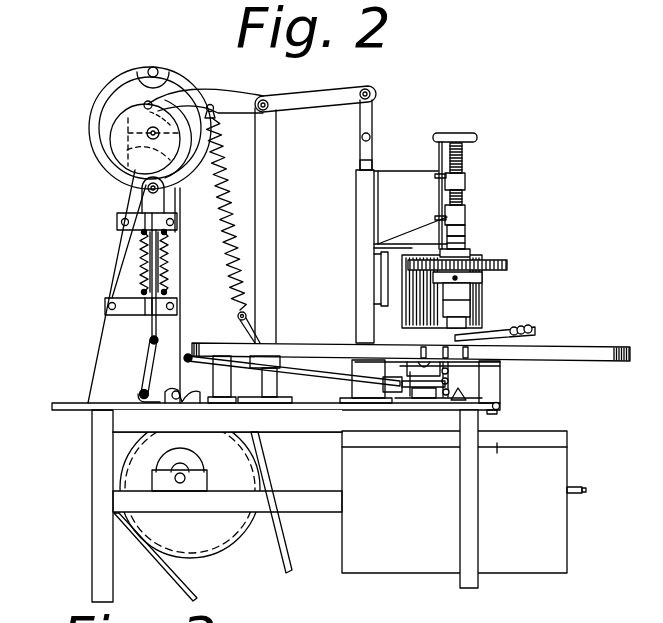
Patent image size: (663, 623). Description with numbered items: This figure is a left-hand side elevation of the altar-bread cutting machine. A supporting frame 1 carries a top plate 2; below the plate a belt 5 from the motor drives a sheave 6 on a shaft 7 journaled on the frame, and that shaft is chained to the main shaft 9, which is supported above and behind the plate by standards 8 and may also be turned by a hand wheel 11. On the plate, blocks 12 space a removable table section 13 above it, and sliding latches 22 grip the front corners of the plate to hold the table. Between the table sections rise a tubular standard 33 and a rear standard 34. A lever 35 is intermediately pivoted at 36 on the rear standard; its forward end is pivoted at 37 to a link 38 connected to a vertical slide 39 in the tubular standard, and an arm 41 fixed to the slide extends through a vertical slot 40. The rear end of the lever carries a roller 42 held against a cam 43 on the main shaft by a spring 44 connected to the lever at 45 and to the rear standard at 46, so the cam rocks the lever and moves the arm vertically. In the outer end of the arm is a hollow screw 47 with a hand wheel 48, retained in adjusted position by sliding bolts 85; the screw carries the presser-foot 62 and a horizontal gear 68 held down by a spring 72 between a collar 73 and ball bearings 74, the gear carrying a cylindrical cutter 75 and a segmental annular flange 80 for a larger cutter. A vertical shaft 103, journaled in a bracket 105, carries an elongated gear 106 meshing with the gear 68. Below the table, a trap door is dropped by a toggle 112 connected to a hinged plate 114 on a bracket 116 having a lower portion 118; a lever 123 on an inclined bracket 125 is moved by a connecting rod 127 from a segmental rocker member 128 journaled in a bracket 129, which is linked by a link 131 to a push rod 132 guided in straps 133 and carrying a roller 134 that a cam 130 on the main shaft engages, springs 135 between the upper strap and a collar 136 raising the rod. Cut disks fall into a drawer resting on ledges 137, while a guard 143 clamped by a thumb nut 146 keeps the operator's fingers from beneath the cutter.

The supporting frame 1 is at (90, 540).
The top plate 2 is at (310, 406).
The belt 5 is at (285, 540).
The sheave 6 is at (218, 545).
The shaft 7 is at (180, 483).
The standards 8 is at (105, 335).
The main shaft 9 is at (147, 133).
The hand wheel 11 is at (166, 58).
The blocks 12 is at (500, 386).
The table section 13 is at (589, 347).
The sliding latches 22 is at (500, 407).
The standard 33 is at (358, 213).
The rear standard 34 is at (273, 272).
The lever 35 is at (240, 102).
The pivot 36 is at (268, 100).
The pivot 37 is at (370, 93).
The link 38 is at (373, 118).
The vertical slide 39 is at (374, 166).
The vertical slot 40 is at (380, 277).
The arm 41 is at (410, 207).
The roller 42 is at (147, 103).
The cam 43 is at (185, 150).
The spring 44 is at (218, 236).
The spring connection 45 is at (212, 103).
The spring connection 46 is at (238, 317).
The hollow screw 47 is at (463, 164).
The hand wheel 48 is at (475, 137).
The presser-foot 62 is at (478, 319).
The horizontal gear 68 is at (508, 265).
The spring 72 is at (466, 246).
The collar 73 is at (466, 232).
The ball bearings 74 is at (471, 255).
The cylindrical cutter 75 is at (466, 300).
The segmental annular flange 80 is at (462, 280).
The sliding bolts 85 is at (438, 161).
The vertical shaft 103 is at (453, 349).
The bracket 105 is at (400, 247).
The elongated gear 106 is at (395, 309).
The toggle 112 is at (491, 412).
The plate 114 is at (468, 372).
The bracket 116 is at (402, 358).
The lower portion of bracket 118 is at (443, 384).
The lever 123 is at (414, 450).
The inclined bracket 125 is at (432, 393).
The connecting rod 127 is at (315, 373).
The segmental rocker member 128 is at (160, 388).
The bracket 129 is at (178, 404).
The cam 130 is at (115, 143).
The link 131 is at (147, 368).
The push rod 132 is at (152, 268).
The straps 133 is at (170, 240).
The roller 134 is at (144, 188).
The springs 135 is at (140, 268).
The collar 136 is at (80, 306).
The ledges 137 is at (497, 453).
The guard 143 is at (548, 331).
The thumb nut 146 is at (534, 331).